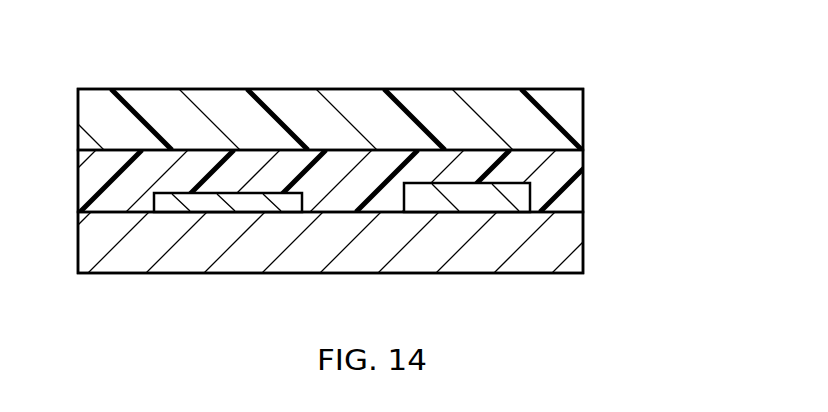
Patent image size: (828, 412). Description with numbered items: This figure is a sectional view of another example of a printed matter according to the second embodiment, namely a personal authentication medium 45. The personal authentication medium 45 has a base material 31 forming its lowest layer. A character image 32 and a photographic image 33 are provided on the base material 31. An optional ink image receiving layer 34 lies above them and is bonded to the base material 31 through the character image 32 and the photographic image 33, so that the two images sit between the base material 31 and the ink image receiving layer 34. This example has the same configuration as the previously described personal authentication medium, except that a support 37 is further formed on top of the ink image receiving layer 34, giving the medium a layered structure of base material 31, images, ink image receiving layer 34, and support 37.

The base material 31 is at (572, 240).
The character image 32 is at (172, 193).
The photographic image 33 is at (460, 180).
The ink image receiving layer 34 is at (337, 128).
The support 37 is at (567, 124).
The personal authentication medium 45 is at (361, 159).